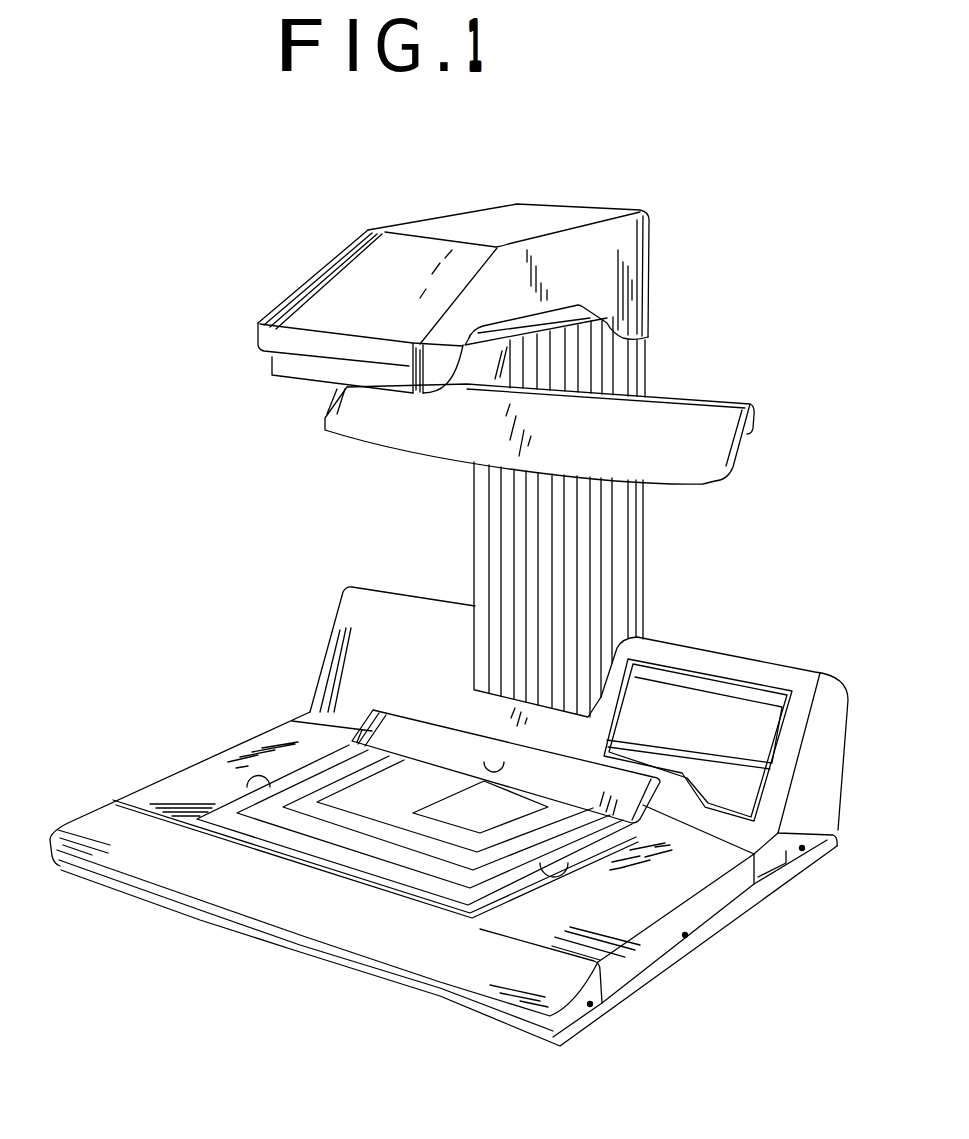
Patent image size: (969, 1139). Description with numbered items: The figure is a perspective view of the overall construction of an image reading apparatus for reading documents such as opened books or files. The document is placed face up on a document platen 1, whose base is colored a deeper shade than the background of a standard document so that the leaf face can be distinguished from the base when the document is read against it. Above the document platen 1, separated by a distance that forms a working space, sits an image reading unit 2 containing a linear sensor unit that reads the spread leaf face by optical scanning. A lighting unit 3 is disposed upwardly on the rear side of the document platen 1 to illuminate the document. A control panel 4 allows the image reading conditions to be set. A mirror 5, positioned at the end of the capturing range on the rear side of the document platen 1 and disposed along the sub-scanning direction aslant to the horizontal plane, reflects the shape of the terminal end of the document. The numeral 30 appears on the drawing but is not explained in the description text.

The document platen 1 is at (220, 817).
The image reading unit 2 is at (425, 222).
The lighting unit 3 is at (677, 400).
The document holder roller 30 is at (498, 745).
The control panel 4 is at (722, 687).
The mirror 5 is at (386, 698).